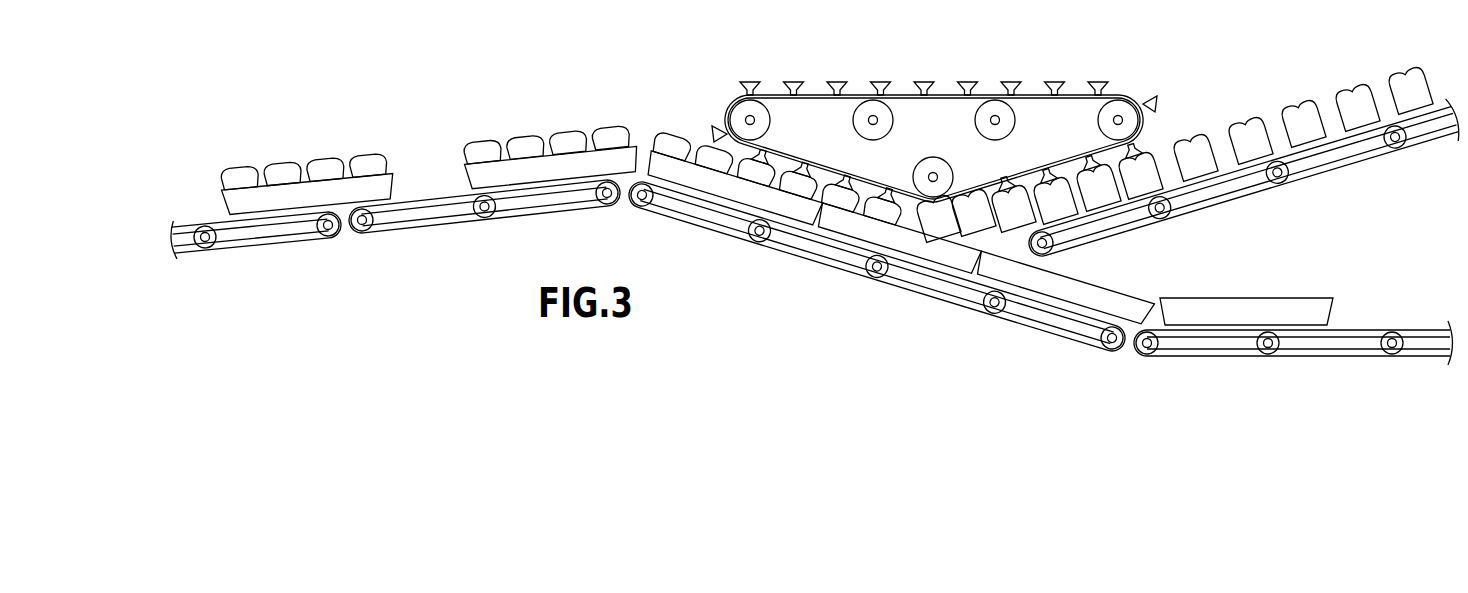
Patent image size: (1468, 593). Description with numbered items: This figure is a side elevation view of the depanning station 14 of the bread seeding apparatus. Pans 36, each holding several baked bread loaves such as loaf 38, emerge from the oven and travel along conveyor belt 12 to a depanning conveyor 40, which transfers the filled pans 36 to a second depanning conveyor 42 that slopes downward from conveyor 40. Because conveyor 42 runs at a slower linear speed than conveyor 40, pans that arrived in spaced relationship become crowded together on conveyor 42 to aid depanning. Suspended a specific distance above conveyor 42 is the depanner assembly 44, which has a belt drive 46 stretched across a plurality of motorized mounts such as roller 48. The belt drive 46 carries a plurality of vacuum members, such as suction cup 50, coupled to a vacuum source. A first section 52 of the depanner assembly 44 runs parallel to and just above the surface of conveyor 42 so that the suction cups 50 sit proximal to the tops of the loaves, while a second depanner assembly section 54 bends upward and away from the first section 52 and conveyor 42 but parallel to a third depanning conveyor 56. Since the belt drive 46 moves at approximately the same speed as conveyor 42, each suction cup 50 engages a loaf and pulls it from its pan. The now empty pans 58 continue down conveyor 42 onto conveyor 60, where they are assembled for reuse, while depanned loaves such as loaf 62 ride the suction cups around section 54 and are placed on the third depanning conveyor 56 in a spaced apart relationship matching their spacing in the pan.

The conveyor belt 12 is at (250, 252).
The depanning station 14 is at (812, 273).
The pan 36 is at (395, 178).
The loaf 38 is at (245, 170).
The depanning conveyor 40 is at (460, 228).
The depanning conveyor 42 is at (950, 307).
The depanner assembly 44 is at (915, 115).
The belt drive 46 is at (1127, 96).
The roller 48 is at (993, 100).
The suction cup 50 is at (878, 82).
The first section 52 is at (830, 162).
The second depanner assembly section 54 is at (1028, 160).
The third depanning conveyor 56 is at (1353, 164).
The empty pan 58 is at (1253, 298).
The conveyor 60 is at (1240, 360).
The loaf 62 is at (1165, 152).